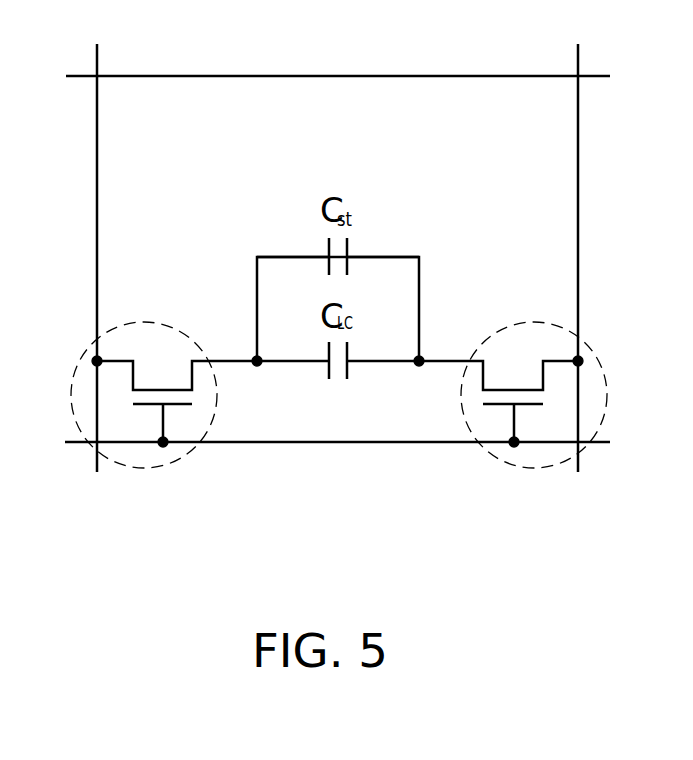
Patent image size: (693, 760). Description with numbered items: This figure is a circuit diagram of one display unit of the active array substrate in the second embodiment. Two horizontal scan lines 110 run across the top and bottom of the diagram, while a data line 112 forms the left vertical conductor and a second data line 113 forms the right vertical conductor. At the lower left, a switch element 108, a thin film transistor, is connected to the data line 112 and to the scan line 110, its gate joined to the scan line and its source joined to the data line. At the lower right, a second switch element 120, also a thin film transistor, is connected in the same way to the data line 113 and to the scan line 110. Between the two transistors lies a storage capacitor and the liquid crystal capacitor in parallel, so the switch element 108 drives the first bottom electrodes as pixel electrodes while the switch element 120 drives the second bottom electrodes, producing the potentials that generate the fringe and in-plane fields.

The scan line 110 is at (288, 75).
The data line 112 is at (97, 268).
The data line 113 is at (578, 268).
The switch element 108 is at (70, 412).
The switch element 120 is at (605, 412).